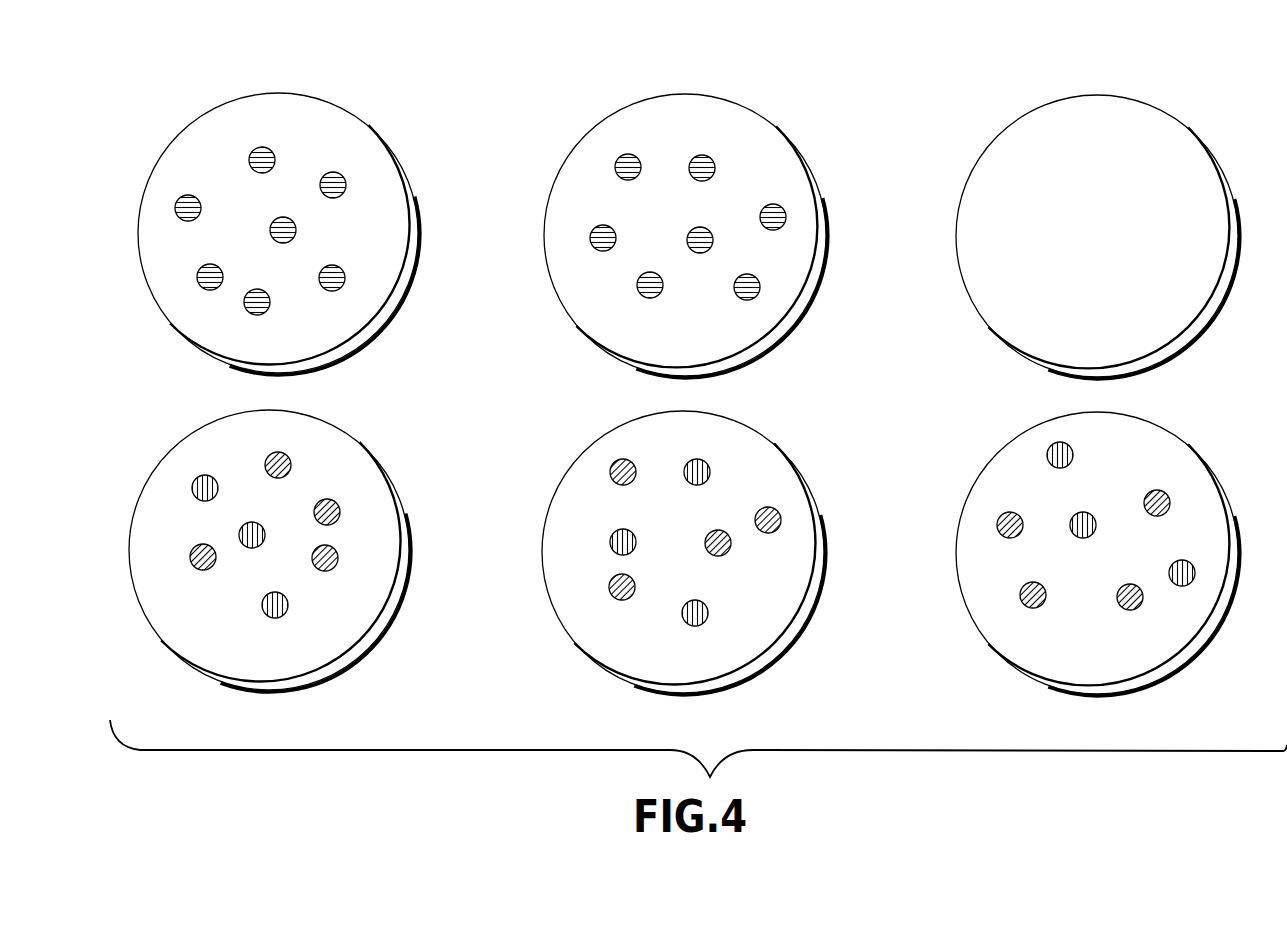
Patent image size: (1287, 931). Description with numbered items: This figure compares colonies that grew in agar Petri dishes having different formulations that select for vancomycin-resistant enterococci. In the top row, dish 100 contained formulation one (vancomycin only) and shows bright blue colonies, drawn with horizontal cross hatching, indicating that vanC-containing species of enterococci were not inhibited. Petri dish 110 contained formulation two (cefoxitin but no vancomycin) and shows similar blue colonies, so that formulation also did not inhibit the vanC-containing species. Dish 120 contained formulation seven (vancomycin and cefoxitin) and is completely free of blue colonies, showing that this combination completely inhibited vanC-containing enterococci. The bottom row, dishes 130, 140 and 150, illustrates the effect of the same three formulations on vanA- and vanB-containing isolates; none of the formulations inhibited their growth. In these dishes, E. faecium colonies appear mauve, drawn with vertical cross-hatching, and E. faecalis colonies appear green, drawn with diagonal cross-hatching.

The dish 100 is at (276, 112).
The Petri dish 110 is at (681, 121).
The dish 120 is at (1111, 132).
The dish 130 is at (201, 634).
The dish 140 is at (611, 638).
The dish 150 is at (1042, 639).